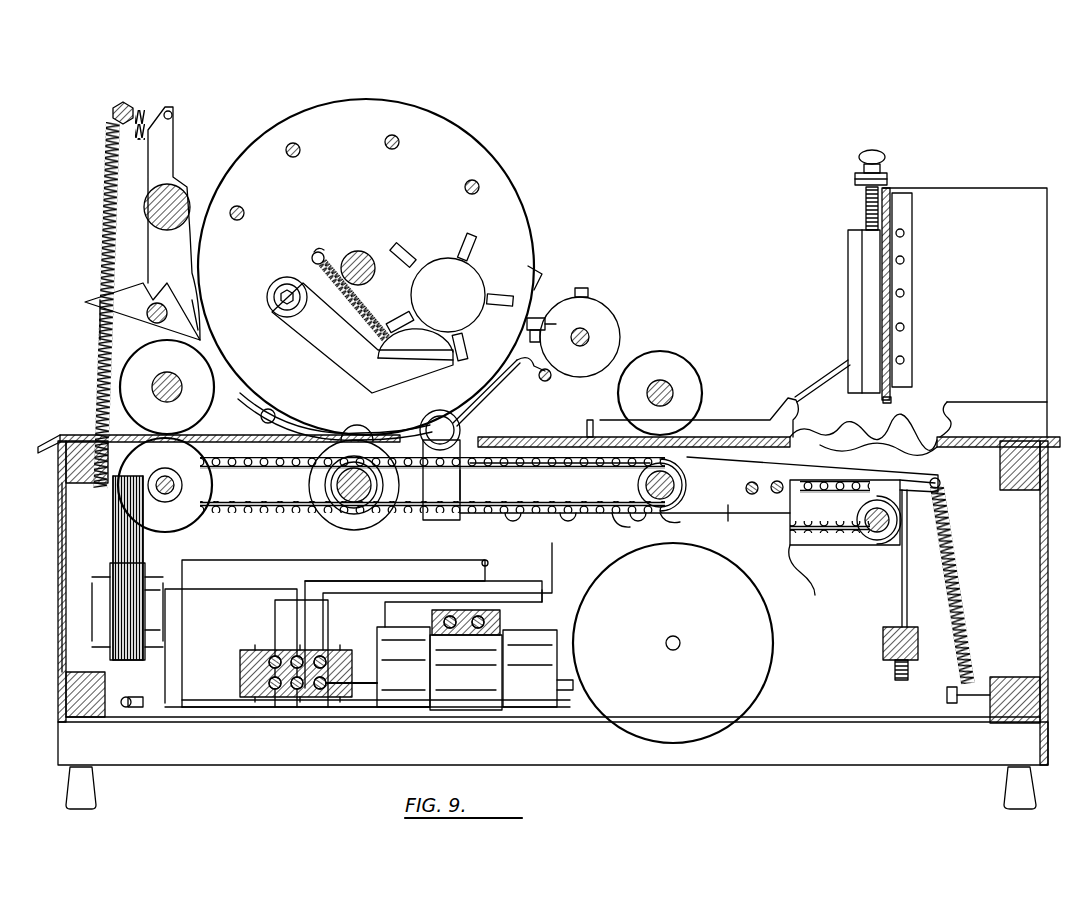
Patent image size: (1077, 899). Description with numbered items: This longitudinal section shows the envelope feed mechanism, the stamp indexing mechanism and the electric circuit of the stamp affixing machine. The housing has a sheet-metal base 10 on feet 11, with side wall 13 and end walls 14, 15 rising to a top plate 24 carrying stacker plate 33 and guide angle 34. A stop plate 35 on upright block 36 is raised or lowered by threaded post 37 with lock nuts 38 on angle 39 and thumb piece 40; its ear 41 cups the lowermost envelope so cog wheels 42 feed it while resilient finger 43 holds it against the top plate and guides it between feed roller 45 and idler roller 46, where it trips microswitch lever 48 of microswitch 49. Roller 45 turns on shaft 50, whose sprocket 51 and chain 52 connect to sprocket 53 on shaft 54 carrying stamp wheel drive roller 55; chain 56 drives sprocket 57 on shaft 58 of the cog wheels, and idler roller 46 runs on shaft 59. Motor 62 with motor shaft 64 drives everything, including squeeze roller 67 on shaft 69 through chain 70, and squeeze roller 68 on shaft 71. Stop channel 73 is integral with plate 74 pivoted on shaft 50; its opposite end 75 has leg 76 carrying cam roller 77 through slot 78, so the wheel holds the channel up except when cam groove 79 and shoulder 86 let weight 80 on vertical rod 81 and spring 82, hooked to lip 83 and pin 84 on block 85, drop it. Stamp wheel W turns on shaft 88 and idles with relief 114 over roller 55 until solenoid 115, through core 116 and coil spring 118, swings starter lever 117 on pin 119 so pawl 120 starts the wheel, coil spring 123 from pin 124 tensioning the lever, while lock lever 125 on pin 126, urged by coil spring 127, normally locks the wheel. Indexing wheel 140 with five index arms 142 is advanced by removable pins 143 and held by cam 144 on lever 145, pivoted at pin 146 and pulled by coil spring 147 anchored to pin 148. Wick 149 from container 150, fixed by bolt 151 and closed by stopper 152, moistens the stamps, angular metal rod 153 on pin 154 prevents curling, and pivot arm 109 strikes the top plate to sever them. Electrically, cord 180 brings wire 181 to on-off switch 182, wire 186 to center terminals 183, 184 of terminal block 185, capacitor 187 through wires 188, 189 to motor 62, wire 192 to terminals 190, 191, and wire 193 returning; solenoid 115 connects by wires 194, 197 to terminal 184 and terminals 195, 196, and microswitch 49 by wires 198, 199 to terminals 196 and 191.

The base 10 is at (881, 768).
The legs 11 is at (90, 798).
The left side wall 13 is at (62, 528).
The left wall panel 14 is at (62, 578).
The right side wall 15 is at (1040, 530).
The table plate 24 is at (95, 436).
The housing box 33 is at (972, 196).
The plate flap 34 is at (785, 404).
The perforated bar 35 is at (885, 341).
The column 36 is at (856, 266).
The threaded screw 37 is at (866, 212).
The stem 38 is at (884, 183).
The nut 39 is at (856, 178).
The knob 40 is at (884, 152).
The foot bracket 41 is at (891, 401).
The wavy plate portion 42 is at (903, 432).
The diagonal brace 43 is at (815, 388).
The guide lug 45 is at (676, 524).
The roller 46 is at (697, 396).
The bracket 48 is at (591, 420).
The guide lug 49 is at (613, 530).
The arm 50 is at (688, 483).
The sprocket 51 is at (645, 490).
The chain upper run 52 is at (538, 463).
The block 53 is at (441, 480).
The sprocket hub 54 is at (332, 500).
The sprocket wheel 55 is at (380, 522).
The chain frame 56 is at (795, 538).
The chain 57 is at (857, 540).
The sprocket 58 is at (904, 532).
The roller hub 59 is at (646, 395).
The wheel 62 is at (774, 660).
The wheel hub 64 is at (678, 650).
The roller 67 is at (183, 520).
The roller 68 is at (200, 408).
The roller hub 69 is at (158, 494).
The chain lower run 70 is at (260, 510).
The roller hub 71 is at (180, 388).
The pivot 73 is at (838, 492).
The guide bar 74 is at (730, 524).
The chain guide 75 is at (478, 515).
The block edge 76 is at (461, 484).
The roller 77 is at (463, 425).
The chain upper run 78 is at (282, 468).
The small roller 79 is at (268, 422).
The adjusting block 80 is at (884, 656).
The rod 81 is at (902, 580).
The spring 82 is at (961, 590).
The pivot pin 83 is at (930, 478).
The bracket 84 is at (953, 687).
The corner block 85 is at (1004, 685).
The curved band 86 is at (260, 392).
The pin 88 is at (362, 255).
The bracket 109 is at (534, 270).
The roller 114 is at (378, 416).
The terminal device 115 is at (106, 582).
The cable bundle 116 is at (113, 520).
The lever 117 is at (138, 309).
The spring portion 118 is at (98, 330).
The pivot 119 is at (168, 311).
The lever tip 120 is at (200, 336).
The spring 123 is at (96, 270).
The anchor nut 124 is at (126, 103).
The plate 125 is at (166, 142).
The roller 126 is at (176, 190).
The small spring 127 is at (158, 110).
The rotary member 140 is at (456, 306).
The pads 142 is at (459, 252).
The holes 143 is at (300, 145).
The shoe 144 is at (435, 362).
The arm 145 is at (349, 360).
The pivot bushing 146 is at (293, 308).
The spring 147 is at (362, 300).
The spring anchor 148 is at (316, 252).
The bracket 149 is at (538, 316).
The roller 150 is at (612, 323).
The roller hub 151 is at (592, 337).
The block 152 is at (588, 292).
The link rod 153 is at (508, 378).
The pin 154 is at (546, 383).
The switch 180 is at (148, 690).
The wire 181 is at (312, 568).
The terminal 182 is at (488, 563).
The terminal block 183 is at (288, 712).
The wire 184 is at (296, 656).
The terminal 185 is at (338, 653).
The wire 186 is at (340, 592).
The relay box 187 is at (410, 661).
The motor unit 188 is at (408, 720).
The bracket 189 is at (571, 688).
The wire 190 is at (269, 683).
The wire 191 is at (271, 658).
The housing 192 is at (488, 735).
The wire 193 is at (222, 712).
The wire 194 is at (228, 596).
The wire 195 is at (366, 677).
The wire 196 is at (321, 656).
The wire 197 is at (166, 668).
The wire 198 is at (550, 582).
The wire 199 is at (552, 552).
The drum W is at (406, 114).